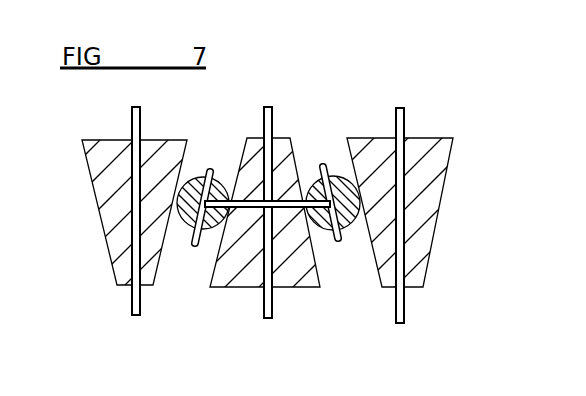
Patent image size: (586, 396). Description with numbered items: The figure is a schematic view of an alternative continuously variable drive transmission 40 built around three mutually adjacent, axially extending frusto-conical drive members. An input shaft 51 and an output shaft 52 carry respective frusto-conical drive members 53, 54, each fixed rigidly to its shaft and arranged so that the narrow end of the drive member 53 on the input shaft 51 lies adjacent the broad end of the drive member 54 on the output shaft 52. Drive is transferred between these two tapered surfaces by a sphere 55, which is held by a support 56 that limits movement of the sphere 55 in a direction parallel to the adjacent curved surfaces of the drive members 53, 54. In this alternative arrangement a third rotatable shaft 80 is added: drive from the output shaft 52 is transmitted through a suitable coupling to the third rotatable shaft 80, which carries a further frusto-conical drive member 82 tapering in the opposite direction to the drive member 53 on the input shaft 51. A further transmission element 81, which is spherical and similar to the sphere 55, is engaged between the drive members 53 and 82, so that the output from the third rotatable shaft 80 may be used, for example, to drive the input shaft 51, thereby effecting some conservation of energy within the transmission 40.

The wedge assembly 40 is at (293, 237).
The input shaft 51 is at (272, 133).
The output shaft 52 is at (404, 305).
The frusto-conical drive member 53 is at (300, 288).
The frusto-conical drive member 54 is at (442, 186).
The sphere 55 is at (342, 177).
The support 56 is at (195, 243).
The third rotatable shaft 80 is at (132, 130).
The transmission element 81 is at (192, 186).
The frusto-conical drive member 82 is at (94, 187).